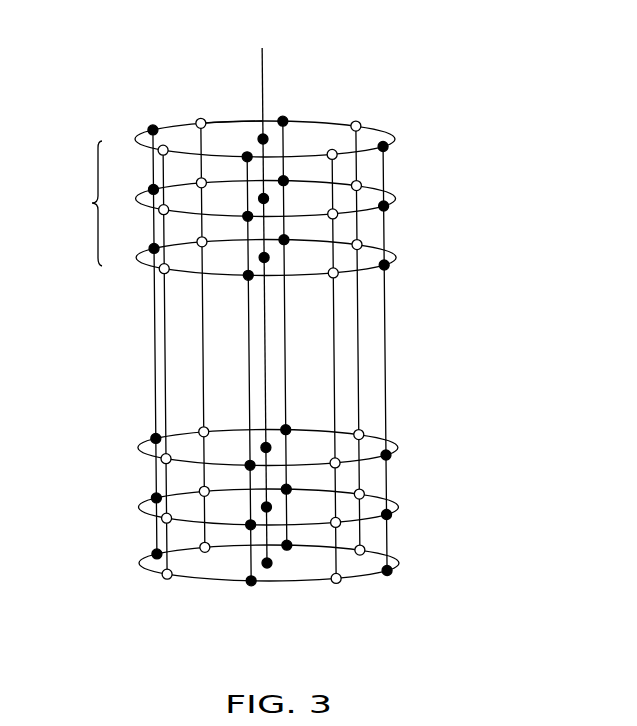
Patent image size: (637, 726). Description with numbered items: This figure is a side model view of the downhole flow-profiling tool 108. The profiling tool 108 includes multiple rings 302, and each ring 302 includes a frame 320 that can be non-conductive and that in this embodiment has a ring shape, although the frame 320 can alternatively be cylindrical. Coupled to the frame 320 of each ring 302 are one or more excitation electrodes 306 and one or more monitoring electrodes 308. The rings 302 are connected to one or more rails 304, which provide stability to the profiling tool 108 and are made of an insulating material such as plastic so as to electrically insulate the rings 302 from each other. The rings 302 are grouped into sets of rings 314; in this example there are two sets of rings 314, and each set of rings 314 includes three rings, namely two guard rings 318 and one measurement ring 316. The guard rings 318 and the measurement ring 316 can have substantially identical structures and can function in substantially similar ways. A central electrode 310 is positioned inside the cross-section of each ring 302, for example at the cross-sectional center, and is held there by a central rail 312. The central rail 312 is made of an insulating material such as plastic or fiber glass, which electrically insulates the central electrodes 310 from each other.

The profiling tool 108 is at (436, 94).
The ring 302 is at (178, 123).
The frame 320 is at (227, 120).
The central rail 312 is at (264, 64).
The guard ring 318 is at (386, 158).
The measurement ring 316 is at (386, 213).
The rail 304 is at (387, 240).
The set of rings 314 is at (79, 203).
The excitation electrode 306 is at (392, 568).
The monitoring electrode 308 is at (335, 584).
The central electrode 310 is at (270, 567).